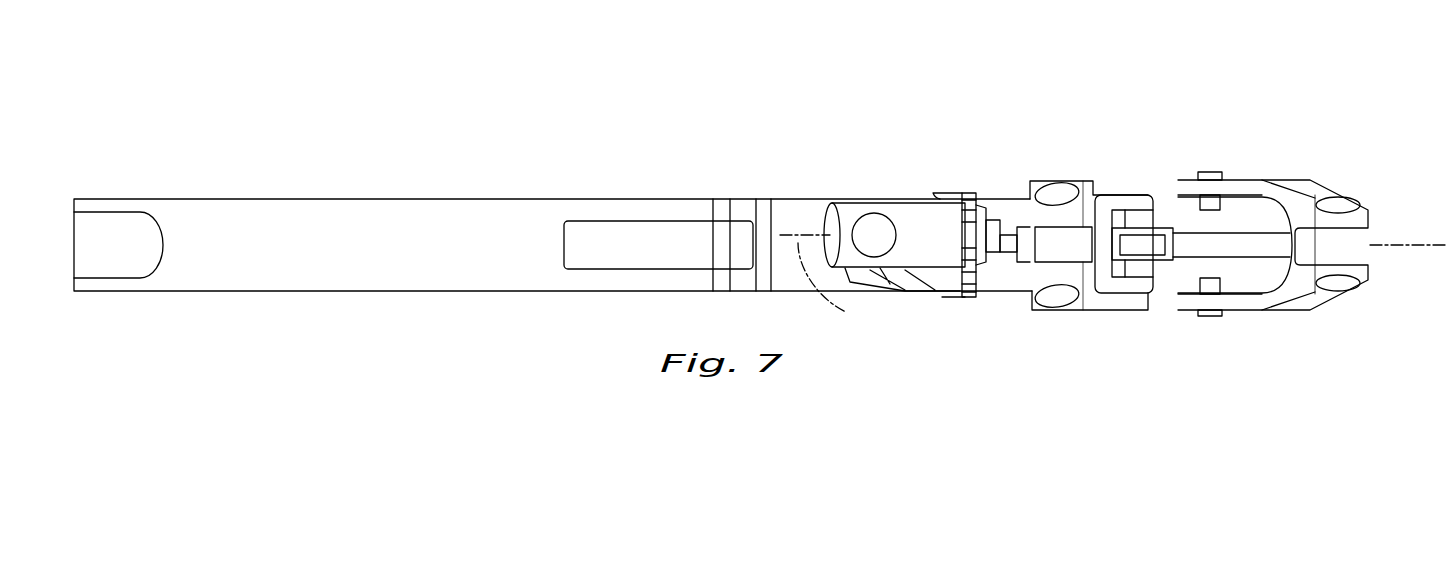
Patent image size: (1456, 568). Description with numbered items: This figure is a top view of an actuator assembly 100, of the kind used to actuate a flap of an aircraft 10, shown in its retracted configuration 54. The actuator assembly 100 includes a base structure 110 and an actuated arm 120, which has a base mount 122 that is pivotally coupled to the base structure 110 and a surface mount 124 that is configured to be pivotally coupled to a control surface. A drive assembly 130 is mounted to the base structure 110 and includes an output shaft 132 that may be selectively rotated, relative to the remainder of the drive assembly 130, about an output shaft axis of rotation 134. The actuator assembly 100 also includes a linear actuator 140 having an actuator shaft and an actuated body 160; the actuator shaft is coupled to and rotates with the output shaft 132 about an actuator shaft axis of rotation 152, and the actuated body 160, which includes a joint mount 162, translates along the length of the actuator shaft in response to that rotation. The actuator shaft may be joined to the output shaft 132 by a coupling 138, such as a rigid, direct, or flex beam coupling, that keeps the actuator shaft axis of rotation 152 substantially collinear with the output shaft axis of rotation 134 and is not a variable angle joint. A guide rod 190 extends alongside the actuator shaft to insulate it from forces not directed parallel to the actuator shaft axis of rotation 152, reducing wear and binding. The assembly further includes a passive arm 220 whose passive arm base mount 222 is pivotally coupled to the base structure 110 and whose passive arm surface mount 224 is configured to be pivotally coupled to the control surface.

The aircraft 10 is at (198, 63).
The actuator assembly 100 is at (186, 115).
The base structure 110 is at (410, 295).
The actuated arm 120 is at (1065, 223).
The base mount 122 is at (1120, 310).
The surface mount 124 is at (1053, 190).
The drive assembly 130 is at (868, 195).
The output shaft 132 is at (1003, 262).
The output shaft axis of rotation 134 is at (839, 285).
The coupling 138 is at (1007, 255).
The linear actuator 140 is at (1157, 317).
The actuator shaft axis of rotation 152 is at (1410, 245).
The actuated body 160 is at (1166, 213).
The joint mount 162 is at (1138, 257).
The guide rod 190 is at (1256, 247).
The passive arm 220 is at (1297, 251).
The passive arm base mount 222 is at (1212, 172).
The passive arm surface mount 224 is at (1338, 289).
The retracted configuration 54 is at (1198, 110).